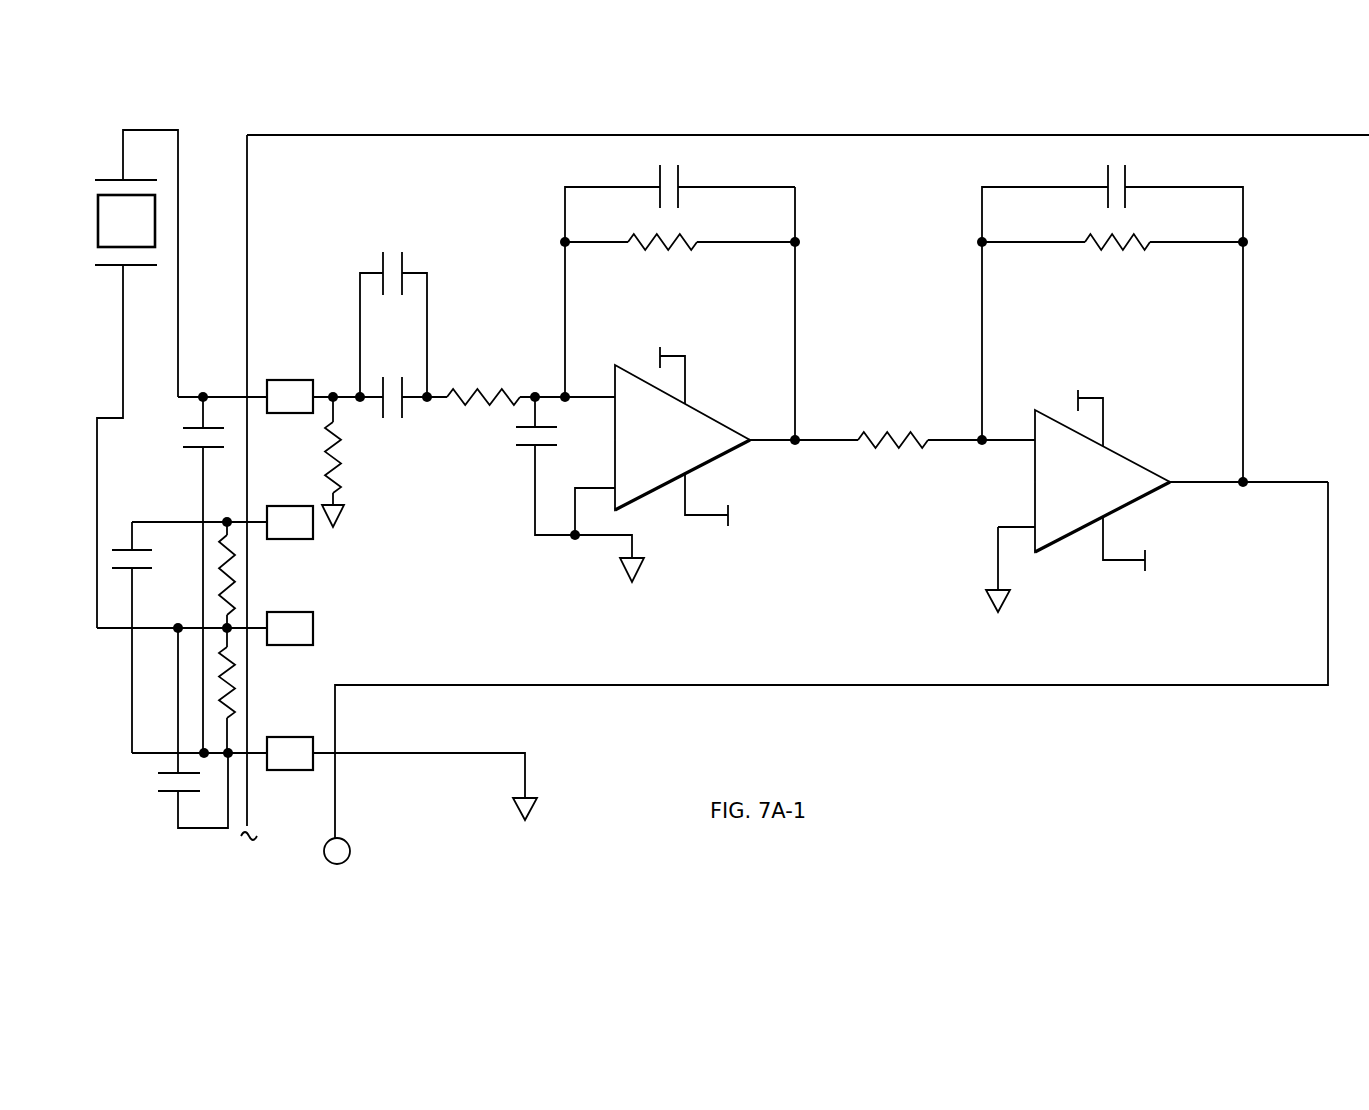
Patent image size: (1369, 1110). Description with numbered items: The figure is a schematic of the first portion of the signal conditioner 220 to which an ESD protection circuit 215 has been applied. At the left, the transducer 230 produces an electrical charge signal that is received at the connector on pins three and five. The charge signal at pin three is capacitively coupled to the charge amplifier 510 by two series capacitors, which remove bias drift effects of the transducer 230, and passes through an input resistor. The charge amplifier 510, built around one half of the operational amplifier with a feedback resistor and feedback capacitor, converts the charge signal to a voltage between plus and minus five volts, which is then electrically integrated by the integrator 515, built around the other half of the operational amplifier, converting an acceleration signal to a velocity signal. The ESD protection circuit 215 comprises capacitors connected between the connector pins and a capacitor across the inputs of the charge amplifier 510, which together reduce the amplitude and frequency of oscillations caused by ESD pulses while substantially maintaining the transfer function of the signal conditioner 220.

The signal conditioner 220 is at (1323, 183).
The ESD protection circuit 215 is at (140, 845).
The transducer 230 is at (152, 268).
The charge amplifier 510 is at (681, 388).
The integrator 515 is at (1152, 398).